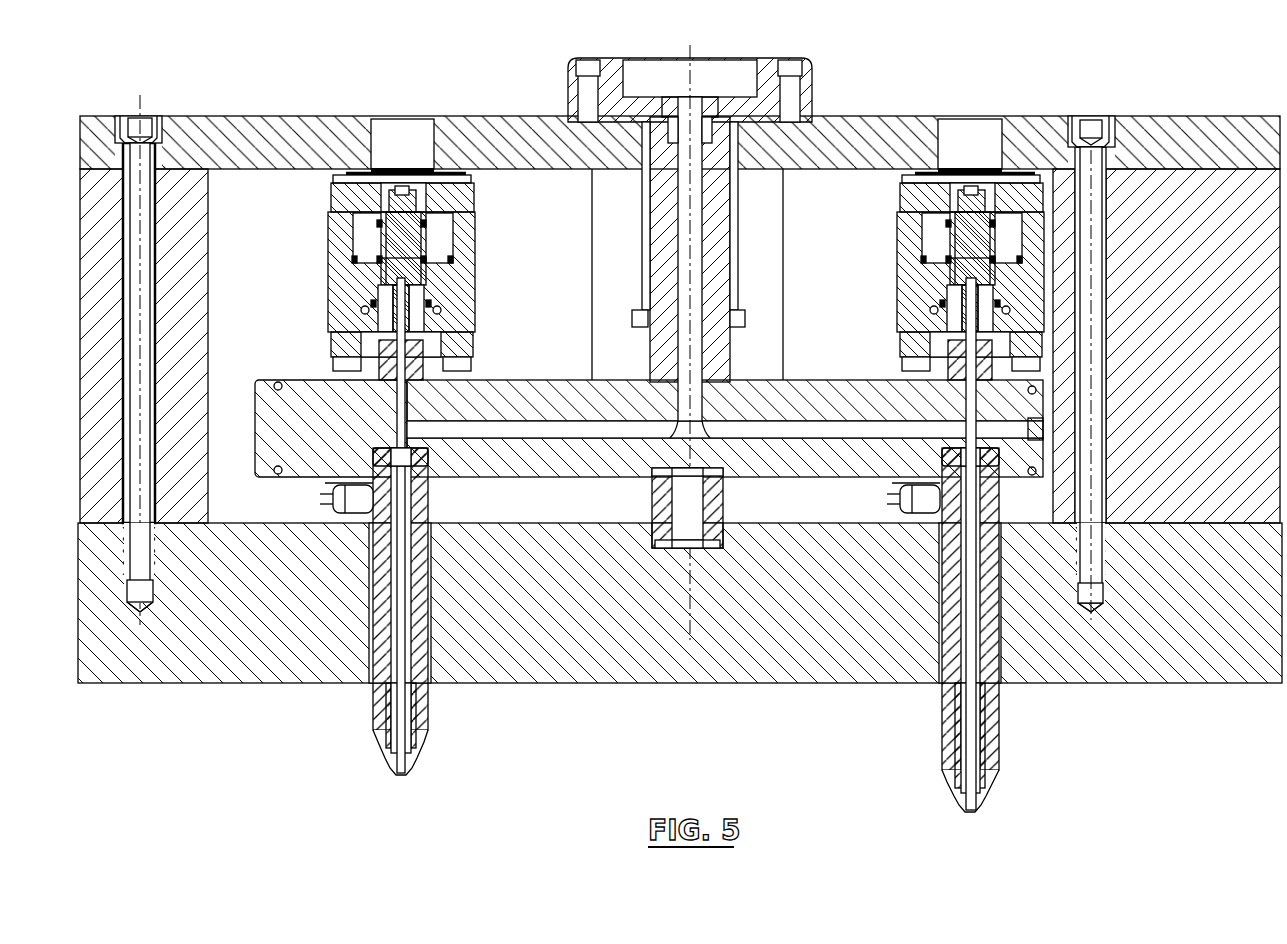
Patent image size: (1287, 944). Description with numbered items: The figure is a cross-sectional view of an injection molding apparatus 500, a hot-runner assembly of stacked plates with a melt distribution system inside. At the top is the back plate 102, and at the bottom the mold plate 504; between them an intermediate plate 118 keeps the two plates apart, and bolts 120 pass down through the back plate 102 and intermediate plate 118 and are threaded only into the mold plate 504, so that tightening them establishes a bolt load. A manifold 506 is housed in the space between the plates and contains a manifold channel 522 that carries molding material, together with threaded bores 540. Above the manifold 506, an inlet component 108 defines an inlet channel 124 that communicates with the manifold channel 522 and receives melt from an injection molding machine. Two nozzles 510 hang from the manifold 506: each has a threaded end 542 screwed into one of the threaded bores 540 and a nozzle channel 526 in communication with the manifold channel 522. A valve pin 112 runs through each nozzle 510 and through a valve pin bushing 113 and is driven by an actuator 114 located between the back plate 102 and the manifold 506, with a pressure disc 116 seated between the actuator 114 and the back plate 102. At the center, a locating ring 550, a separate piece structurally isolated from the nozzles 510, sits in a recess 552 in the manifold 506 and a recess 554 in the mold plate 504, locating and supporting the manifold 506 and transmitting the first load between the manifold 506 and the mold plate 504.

The injection molding apparatus 500 is at (680, 419).
The back plate 102 is at (1212, 162).
The bolts 120 is at (1086, 160).
The intermediate plate 118 is at (1212, 432).
The mold plate 504 is at (1212, 621).
The manifold 506 is at (812, 390).
The manifold channel 522 is at (808, 432).
The threaded bores 540 is at (940, 456).
The inlet component 108 is at (718, 250).
The inlet channel 124 is at (682, 223).
The pressure discs 116 is at (903, 186).
The actuators 114 is at (908, 288).
The valve pin bushings 113 is at (940, 392).
The nozzle channels 526 is at (962, 660).
The nozzles 510 is at (996, 722).
The valve pins 112 is at (972, 698).
The threaded ends 542 is at (998, 478).
The locating ring 550 is at (716, 540).
The recess 552 is at (655, 472).
The recess 554 is at (650, 546).